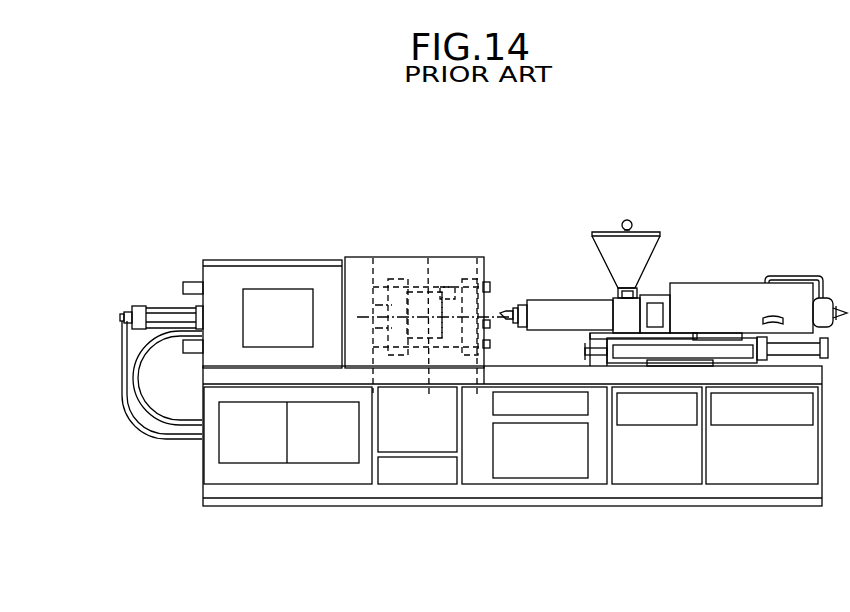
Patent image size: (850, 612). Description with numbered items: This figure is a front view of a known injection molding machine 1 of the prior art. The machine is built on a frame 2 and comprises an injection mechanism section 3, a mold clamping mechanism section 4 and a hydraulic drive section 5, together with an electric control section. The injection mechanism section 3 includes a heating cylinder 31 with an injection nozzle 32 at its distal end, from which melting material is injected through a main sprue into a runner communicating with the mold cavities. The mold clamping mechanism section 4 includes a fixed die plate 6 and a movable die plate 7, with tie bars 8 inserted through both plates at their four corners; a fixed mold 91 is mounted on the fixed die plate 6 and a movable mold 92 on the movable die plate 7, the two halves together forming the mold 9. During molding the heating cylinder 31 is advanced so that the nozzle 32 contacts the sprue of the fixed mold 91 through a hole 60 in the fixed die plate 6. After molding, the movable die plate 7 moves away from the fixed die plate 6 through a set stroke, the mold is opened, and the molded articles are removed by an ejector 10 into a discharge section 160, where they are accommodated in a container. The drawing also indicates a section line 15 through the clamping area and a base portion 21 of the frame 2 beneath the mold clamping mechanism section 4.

The clamping unit 1 is at (344, 259).
The frame 2 is at (529, 375).
The injection mechanism section 3 is at (717, 290).
The mold clamping mechanism section 4 is at (432, 292).
The hydraulic drive section 5 is at (168, 313).
The fixed die plate 6 is at (478, 283).
The movable die plate 7 is at (395, 280).
The tie bars 8 is at (426, 307).
The mold 9 is at (467, 288).
The fixed mold 91 is at (450, 288).
The movable mold 92 is at (420, 292).
The ejector 10 is at (437, 342).
The section line 15 is at (442, 226).
The base support 21 is at (497, 368).
The heating cylinder 31 is at (560, 303).
The injection nozzle 32 is at (503, 310).
The hole of the fixed die plate 60 is at (534, 371).
The discharge section 160 is at (417, 378).